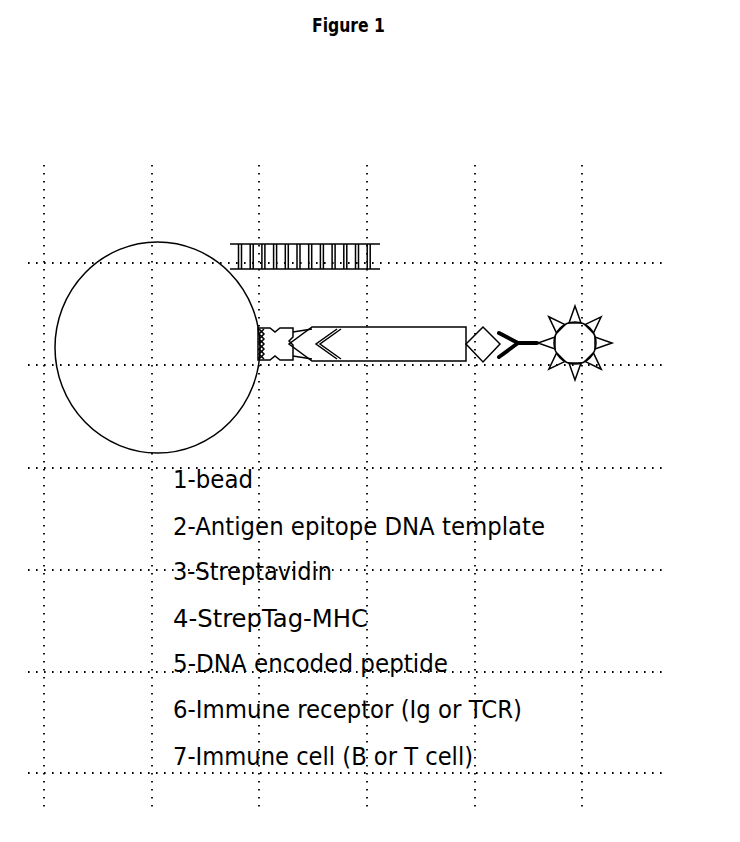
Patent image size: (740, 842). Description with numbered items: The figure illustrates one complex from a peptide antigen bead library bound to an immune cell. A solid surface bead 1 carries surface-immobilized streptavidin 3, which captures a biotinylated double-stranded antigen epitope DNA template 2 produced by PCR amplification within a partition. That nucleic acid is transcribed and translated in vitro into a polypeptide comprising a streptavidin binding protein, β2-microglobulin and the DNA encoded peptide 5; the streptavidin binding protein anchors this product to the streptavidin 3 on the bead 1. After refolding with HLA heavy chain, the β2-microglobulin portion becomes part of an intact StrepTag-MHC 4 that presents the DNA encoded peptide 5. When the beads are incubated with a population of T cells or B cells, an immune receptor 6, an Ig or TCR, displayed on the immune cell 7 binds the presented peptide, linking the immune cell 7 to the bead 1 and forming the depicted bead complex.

The bead 1 is at (157, 347).
The antigen epitope DNA template 2 is at (305, 236).
The streptavidin 3 is at (285, 356).
The StrepTag-MHC 4 is at (377, 344).
The DNA encoded peptide 5 is at (483, 344).
The immune receptor 6 is at (518, 352).
The immune cell 7 is at (575, 343).